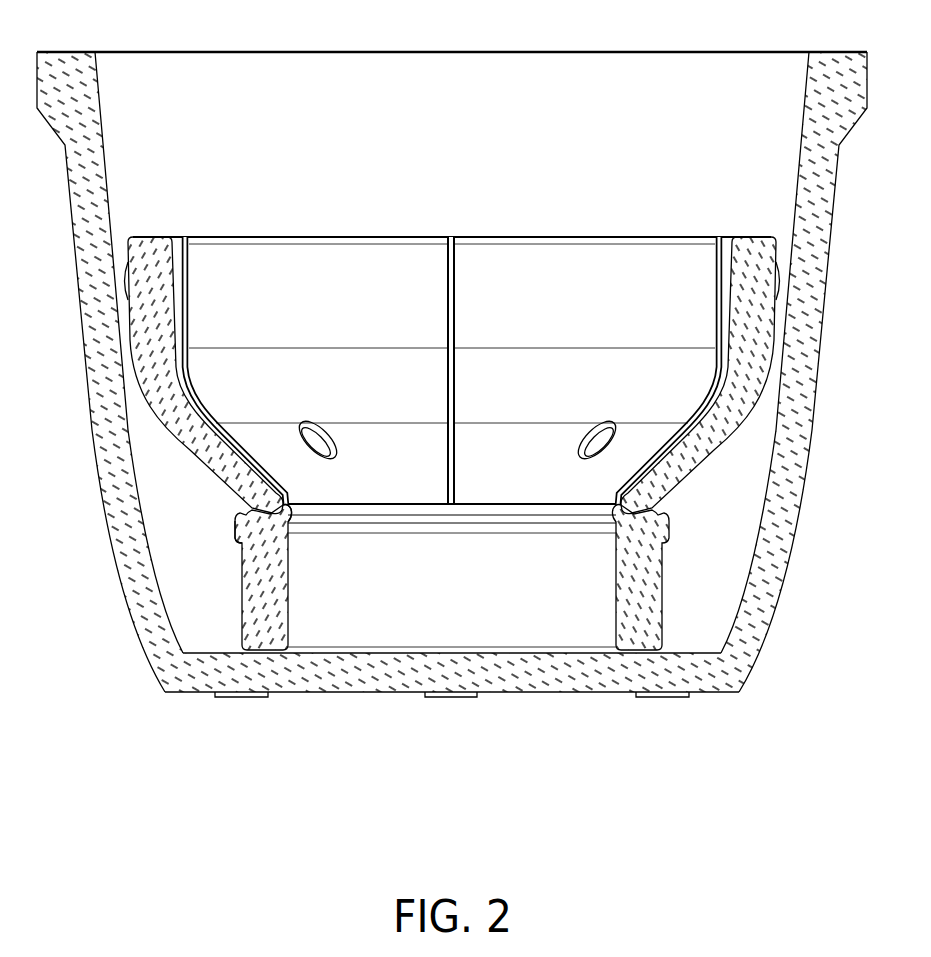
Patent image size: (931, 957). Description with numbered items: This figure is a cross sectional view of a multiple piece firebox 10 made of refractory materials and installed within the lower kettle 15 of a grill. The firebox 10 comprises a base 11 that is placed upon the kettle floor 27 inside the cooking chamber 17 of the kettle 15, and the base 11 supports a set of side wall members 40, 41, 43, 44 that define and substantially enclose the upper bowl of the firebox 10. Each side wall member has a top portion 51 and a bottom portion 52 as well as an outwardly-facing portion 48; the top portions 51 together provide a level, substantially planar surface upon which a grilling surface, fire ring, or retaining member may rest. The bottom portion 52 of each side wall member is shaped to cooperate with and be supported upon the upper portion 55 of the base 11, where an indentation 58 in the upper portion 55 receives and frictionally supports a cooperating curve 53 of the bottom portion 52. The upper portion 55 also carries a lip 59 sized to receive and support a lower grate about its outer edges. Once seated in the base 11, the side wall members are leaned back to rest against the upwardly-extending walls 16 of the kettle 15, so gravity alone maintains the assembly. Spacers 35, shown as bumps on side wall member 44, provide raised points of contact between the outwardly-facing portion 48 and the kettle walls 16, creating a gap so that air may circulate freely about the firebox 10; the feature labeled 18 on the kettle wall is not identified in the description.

The multiple piece firebox 10 is at (399, 213).
The base 11 is at (240, 588).
The kettle 15 is at (27, 67).
The upwardly-extending walls 16 is at (803, 91).
The cooking chamber 17 is at (616, 80).
The inner surface of outer vessel 18 is at (770, 473).
The kettle floor 27 is at (672, 653).
The spacers 35 is at (783, 258).
The side wall member 40 is at (282, 262).
The side wall member 41 is at (187, 258).
The side wall member 43 is at (718, 258).
The side wall member 44 is at (568, 262).
The outwardly-facing portion 48 is at (694, 499).
The top portion 51 is at (152, 237).
The bottom portion 52 is at (190, 487).
The curve 53 is at (235, 515).
The upper portion 55 is at (290, 508).
The indentation 58 is at (235, 537).
The lip 59 is at (616, 503).